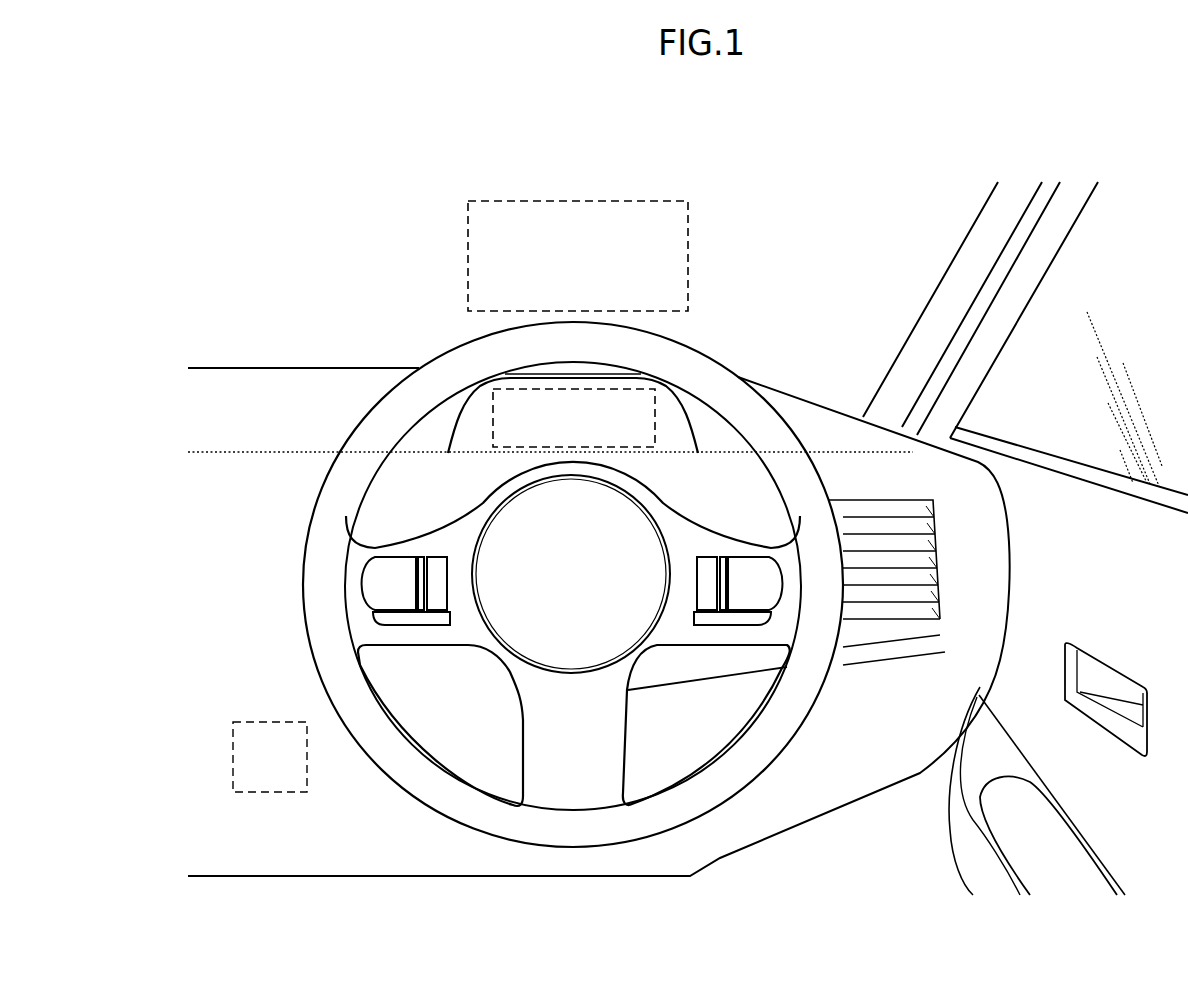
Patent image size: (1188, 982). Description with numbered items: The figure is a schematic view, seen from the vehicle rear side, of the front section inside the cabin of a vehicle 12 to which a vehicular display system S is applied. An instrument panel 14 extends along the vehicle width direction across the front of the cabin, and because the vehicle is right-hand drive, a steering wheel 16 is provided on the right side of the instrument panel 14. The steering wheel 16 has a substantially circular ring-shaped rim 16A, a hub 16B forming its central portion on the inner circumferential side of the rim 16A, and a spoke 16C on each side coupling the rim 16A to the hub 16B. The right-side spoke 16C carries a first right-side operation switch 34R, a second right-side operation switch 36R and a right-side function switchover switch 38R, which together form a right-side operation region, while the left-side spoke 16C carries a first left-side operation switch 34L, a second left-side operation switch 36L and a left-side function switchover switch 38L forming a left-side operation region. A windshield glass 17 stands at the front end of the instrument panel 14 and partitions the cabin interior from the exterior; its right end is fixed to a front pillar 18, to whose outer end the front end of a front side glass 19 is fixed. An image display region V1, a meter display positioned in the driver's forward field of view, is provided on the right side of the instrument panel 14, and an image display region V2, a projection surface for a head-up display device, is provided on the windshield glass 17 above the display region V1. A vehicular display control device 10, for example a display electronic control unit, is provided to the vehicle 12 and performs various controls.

The steering system S is at (240, 252).
The vehicular display control device 10 is at (258, 722).
The vehicle 12 is at (335, 297).
The instrument panel 14 is at (230, 366).
The steering wheel 16 is at (700, 352).
The rim 16A is at (302, 558).
The hub 16B is at (497, 663).
The spoke 16C is at (463, 517).
The windshield glass 17 is at (776, 237).
The front pillar 18 is at (930, 330).
The front side glass 19 is at (1085, 277).
The first left-side operation switch 34L is at (368, 550).
The first right-side operation switch 34R is at (745, 555).
The second left-side operation switch 36L is at (434, 555).
The second right-side operation switch 36R is at (714, 555).
The left-side function switchover switch 38L is at (420, 615).
The right-side function switchover switch 38R is at (720, 615).
The image display region V1 is at (574, 418).
The image display region V2 is at (578, 256).